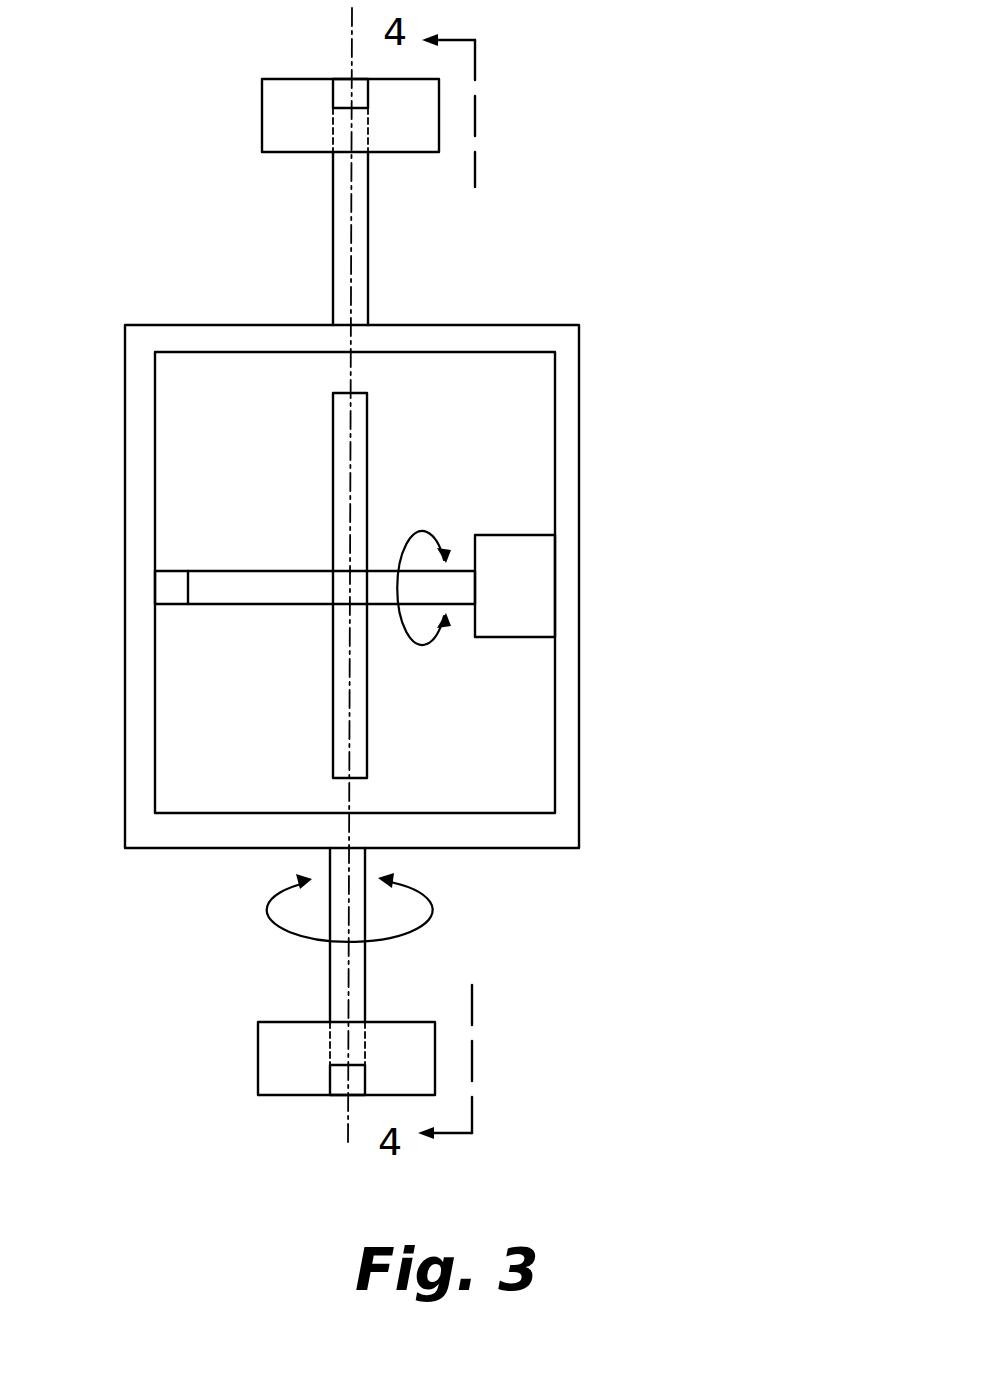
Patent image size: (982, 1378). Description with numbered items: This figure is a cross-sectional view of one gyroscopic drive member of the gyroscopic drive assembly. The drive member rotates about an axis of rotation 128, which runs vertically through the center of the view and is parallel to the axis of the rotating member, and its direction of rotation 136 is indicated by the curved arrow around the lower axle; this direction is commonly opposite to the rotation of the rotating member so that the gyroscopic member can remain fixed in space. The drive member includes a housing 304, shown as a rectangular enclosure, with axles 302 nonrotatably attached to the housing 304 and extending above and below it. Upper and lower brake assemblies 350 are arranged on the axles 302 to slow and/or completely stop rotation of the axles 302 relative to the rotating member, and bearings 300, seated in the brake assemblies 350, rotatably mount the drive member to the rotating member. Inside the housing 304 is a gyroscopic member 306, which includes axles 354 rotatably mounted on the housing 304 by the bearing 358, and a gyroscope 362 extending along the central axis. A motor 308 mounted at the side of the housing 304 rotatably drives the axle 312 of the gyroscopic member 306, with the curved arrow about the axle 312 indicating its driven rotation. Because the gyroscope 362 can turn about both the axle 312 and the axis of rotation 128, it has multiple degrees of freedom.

The axis of rotation 128 is at (352, 50).
The direction of rotation 136 is at (432, 910).
The bearing 300 is at (342, 95).
The axle 302 is at (330, 975).
The housing 304 is at (582, 448).
The gyroscopic member 306 is at (418, 731).
The motor 308 is at (517, 585).
The axle of the gyroscopic member 312 is at (387, 568).
The brake assembly 350 is at (262, 143).
The axle 354 is at (248, 603).
The bearing 358 is at (175, 568).
The gyroscope 362 is at (368, 225).